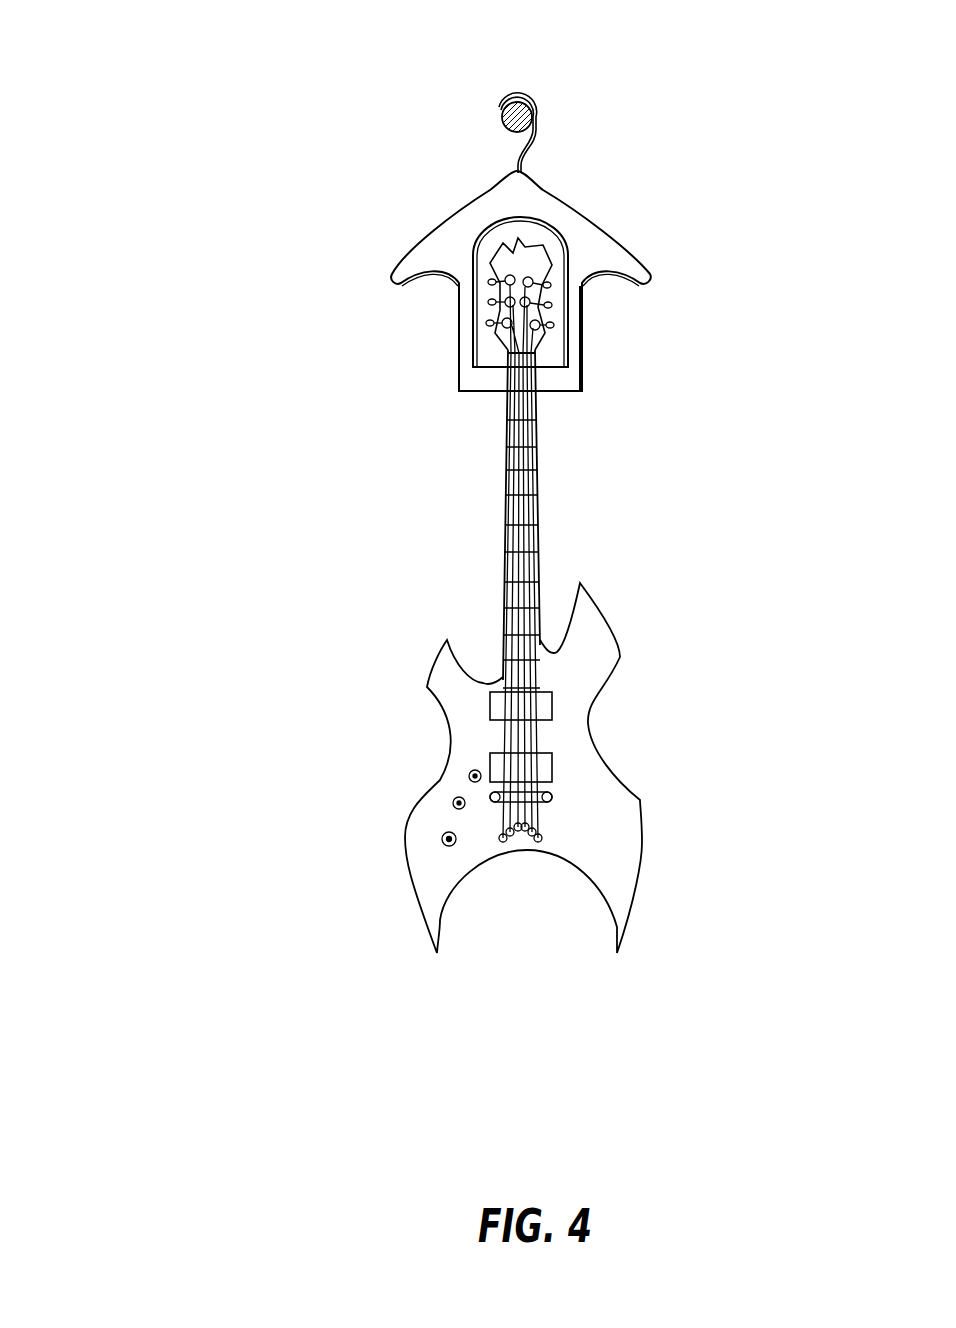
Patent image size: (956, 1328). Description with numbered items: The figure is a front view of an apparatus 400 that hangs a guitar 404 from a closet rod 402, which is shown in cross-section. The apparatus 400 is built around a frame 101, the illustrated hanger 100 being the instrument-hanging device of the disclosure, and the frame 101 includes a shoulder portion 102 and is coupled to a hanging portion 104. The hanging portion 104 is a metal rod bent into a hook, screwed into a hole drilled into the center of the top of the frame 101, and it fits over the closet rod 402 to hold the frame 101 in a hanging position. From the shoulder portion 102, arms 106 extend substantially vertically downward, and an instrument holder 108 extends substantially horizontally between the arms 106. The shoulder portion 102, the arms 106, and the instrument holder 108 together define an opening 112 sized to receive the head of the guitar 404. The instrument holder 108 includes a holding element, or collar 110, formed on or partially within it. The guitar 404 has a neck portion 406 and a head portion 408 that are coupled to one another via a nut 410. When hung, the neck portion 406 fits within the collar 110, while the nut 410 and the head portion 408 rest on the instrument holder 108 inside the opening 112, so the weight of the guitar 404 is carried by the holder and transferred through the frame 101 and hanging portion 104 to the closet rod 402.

The apparatus 400 is at (158, 56).
The guitar hanger 100 is at (706, 249).
The frame 101 is at (497, 205).
The shoulder portion 102 is at (420, 240).
The hanging portion 104 is at (537, 142).
The arms 106 is at (583, 323).
The instrument holder 108 is at (471, 395).
The collar 110 is at (542, 408).
The opening 112 is at (478, 352).
The closet rod 402 is at (497, 120).
The guitar 404 is at (397, 666).
The neck portion 406 is at (540, 527).
The head portion 408 is at (538, 244).
The nut 410 is at (556, 367).